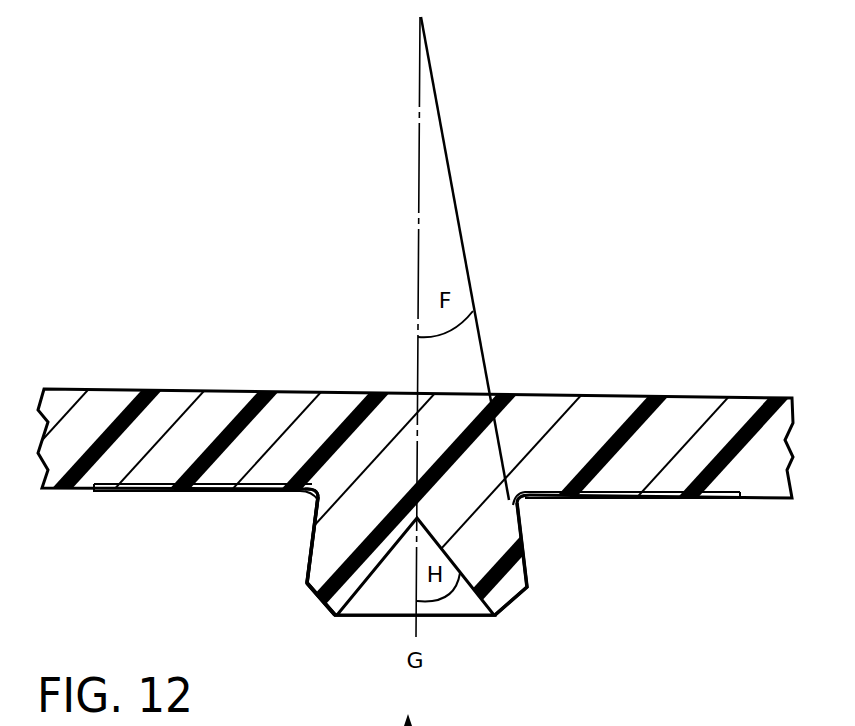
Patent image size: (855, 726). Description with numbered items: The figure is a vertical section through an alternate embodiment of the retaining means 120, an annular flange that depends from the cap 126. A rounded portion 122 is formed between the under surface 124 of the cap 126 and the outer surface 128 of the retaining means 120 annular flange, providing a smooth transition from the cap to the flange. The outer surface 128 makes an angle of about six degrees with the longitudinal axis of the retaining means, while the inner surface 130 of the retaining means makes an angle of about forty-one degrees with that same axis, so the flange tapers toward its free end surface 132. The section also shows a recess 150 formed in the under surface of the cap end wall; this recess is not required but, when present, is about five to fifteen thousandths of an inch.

The retaining means 120 is at (285, 612).
The rounded portion 122 is at (308, 496).
The under surface 124 is at (187, 494).
The cap 126 is at (285, 386).
The outer surface 128 is at (307, 552).
The inner surface 130 is at (368, 578).
The free end surface 132 is at (317, 604).
The recess 150 is at (710, 496).